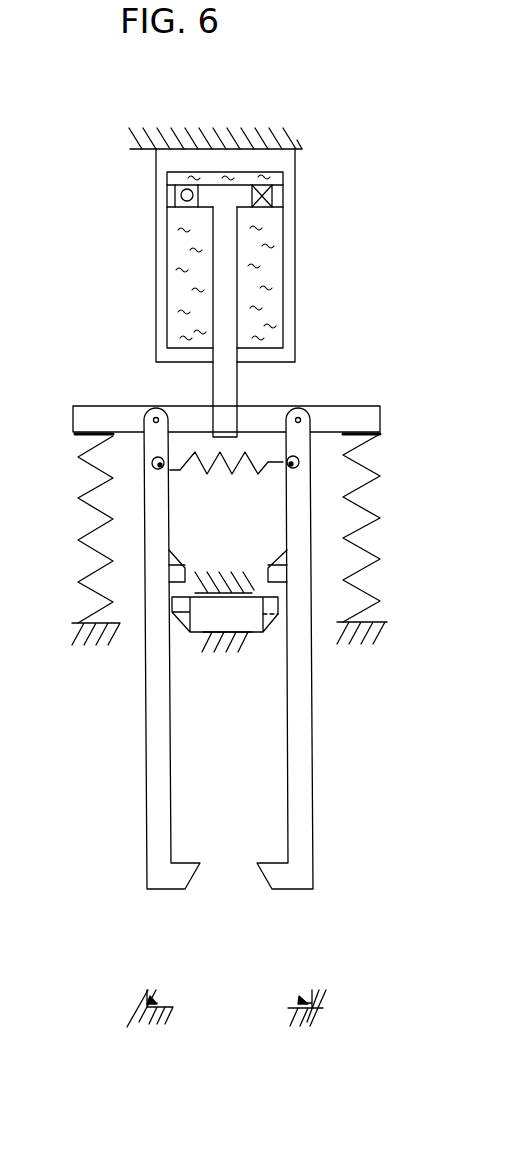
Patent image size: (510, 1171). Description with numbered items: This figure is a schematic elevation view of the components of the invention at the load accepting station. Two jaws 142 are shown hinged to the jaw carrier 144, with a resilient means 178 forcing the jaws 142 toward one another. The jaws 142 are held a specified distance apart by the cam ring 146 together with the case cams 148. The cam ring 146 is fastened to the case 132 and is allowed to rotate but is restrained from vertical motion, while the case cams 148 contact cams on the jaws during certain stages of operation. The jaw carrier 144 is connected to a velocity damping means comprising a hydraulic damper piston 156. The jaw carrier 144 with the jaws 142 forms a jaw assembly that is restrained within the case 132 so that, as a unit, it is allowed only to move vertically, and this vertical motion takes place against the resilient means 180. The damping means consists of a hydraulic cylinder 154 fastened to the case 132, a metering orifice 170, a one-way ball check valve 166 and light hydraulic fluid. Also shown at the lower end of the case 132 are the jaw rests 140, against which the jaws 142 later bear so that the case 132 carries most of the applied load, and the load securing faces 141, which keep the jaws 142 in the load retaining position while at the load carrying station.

The case 132 is at (298, 145).
The hydraulic cylinder 154 is at (228, 290).
The hydraulic damper piston 156 is at (220, 192).
The one-way ball check valve 166 is at (178, 188).
The metering orifice 170 is at (268, 197).
The jaw carrier 144 is at (320, 417).
The jaws 142 is at (158, 795).
The resilient means 180 is at (367, 462).
The resilient means 178 is at (215, 470).
The case cams 148 is at (267, 617).
The cam ring 146 is at (232, 613).
The load securing faces 141 is at (153, 995).
The jaw rests 140 is at (300, 1000).